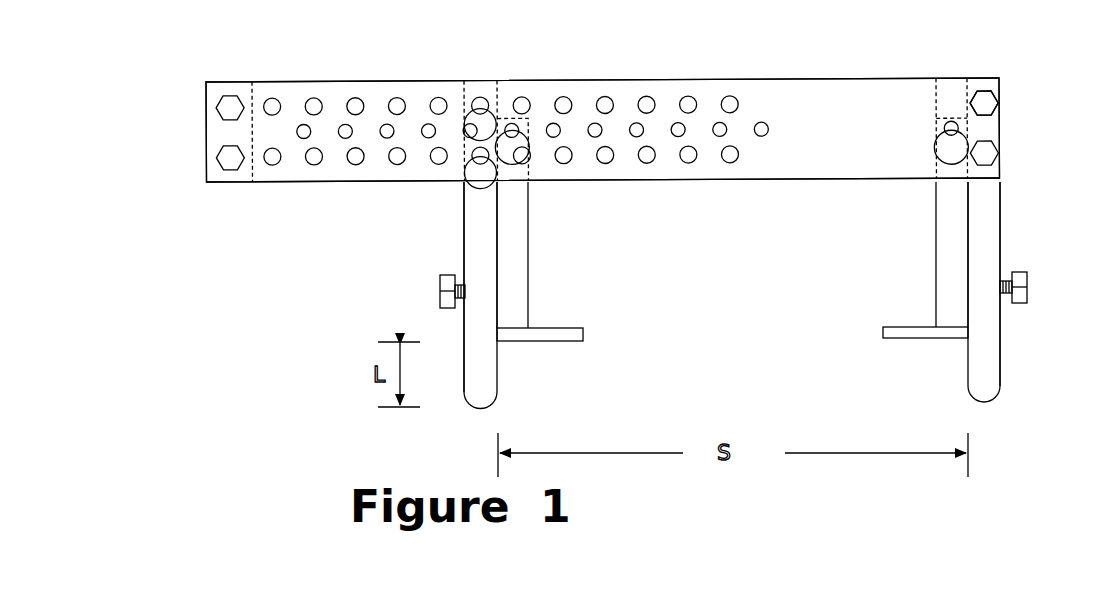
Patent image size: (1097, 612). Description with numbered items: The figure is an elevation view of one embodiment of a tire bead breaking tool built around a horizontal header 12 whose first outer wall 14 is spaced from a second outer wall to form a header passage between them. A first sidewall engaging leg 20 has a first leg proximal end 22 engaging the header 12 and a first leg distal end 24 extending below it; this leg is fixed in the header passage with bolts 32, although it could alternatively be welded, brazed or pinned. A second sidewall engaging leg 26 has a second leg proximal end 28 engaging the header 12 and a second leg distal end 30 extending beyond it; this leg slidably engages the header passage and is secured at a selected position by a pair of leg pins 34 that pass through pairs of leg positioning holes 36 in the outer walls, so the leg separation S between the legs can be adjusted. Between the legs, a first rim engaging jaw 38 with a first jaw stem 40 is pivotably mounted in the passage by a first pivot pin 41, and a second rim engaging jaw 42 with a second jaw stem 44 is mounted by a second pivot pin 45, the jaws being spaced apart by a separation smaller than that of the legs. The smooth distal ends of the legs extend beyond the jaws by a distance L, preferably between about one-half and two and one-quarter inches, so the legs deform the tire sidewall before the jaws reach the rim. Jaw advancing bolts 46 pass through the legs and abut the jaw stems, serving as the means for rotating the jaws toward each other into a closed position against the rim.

The header 12 is at (655, 192).
The first outer wall 14 is at (843, 147).
The first sidewall engaging leg 20 is at (1003, 217).
The first leg proximal end 22 is at (985, 86).
The first leg distal end 24 is at (980, 385).
The second sidewall engaging leg 26 is at (458, 237).
The second leg proximal end 28 is at (478, 92).
The second leg distal end 30 is at (480, 380).
The bolts 32 is at (985, 152).
The leg pins 34 is at (480, 155).
The leg positioning holes 36 is at (647, 155).
The first rim engaging jaw 38 is at (868, 338).
The first jaw stem 40 is at (950, 295).
The first pivot pin 41 is at (950, 127).
The second rim engaging jaw 42 is at (590, 340).
The second jaw stem 44 is at (515, 280).
The second pivot pin 45 is at (510, 133).
The jaw advancing bolts 46 is at (440, 293).